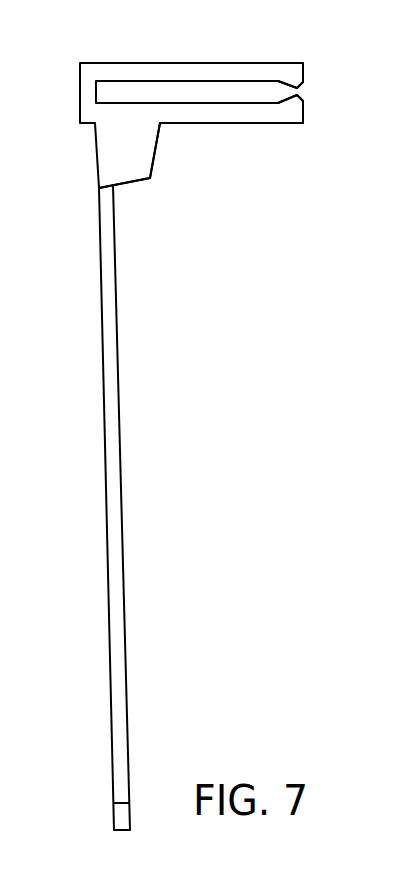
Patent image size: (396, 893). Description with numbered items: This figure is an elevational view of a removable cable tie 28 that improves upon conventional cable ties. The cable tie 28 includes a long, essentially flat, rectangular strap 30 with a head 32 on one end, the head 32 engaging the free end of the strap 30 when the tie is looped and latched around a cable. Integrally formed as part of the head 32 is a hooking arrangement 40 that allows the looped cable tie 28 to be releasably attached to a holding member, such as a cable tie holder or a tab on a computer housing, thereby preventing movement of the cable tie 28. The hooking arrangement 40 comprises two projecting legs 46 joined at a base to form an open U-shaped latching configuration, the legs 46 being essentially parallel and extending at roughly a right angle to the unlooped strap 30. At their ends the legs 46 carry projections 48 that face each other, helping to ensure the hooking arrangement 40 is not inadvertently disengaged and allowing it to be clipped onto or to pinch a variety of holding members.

The cable tie 28 is at (208, 445).
The strap 30 is at (123, 585).
The head 32 is at (144, 157).
The hooking arrangement 40 is at (82, 50).
The projecting legs 46 is at (258, 118).
The projections 48 is at (297, 96).